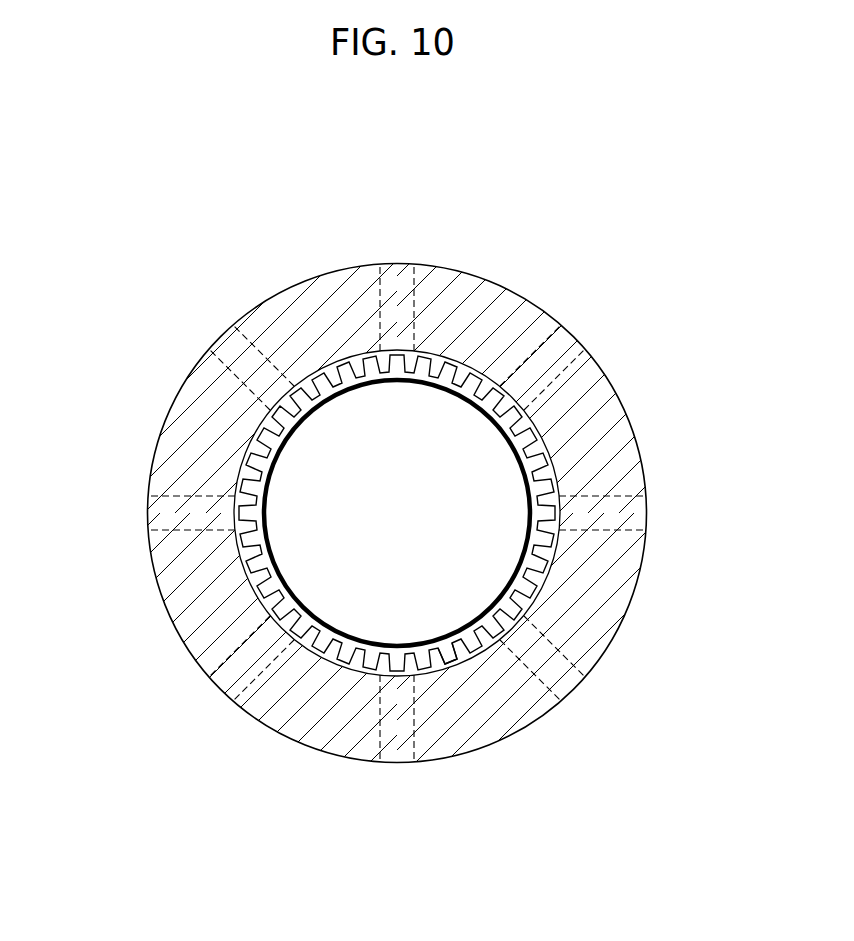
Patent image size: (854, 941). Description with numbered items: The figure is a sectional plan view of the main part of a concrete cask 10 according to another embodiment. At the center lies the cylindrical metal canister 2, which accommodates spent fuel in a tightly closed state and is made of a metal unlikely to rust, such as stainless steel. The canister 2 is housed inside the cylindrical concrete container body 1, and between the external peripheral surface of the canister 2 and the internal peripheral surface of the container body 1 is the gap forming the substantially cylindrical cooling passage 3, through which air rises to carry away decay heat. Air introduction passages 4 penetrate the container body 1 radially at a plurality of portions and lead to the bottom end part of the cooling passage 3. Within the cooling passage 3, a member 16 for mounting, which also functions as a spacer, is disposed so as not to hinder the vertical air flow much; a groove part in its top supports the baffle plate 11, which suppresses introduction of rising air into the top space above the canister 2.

The container body 1 is at (623, 603).
The canister 2 is at (488, 440).
The cooling passage 3 is at (258, 480).
The air introduction passages 4 is at (430, 326).
The concrete cask 10 is at (399, 515).
The baffle plate 11 is at (548, 461).
The member for mounting 16 is at (450, 650).